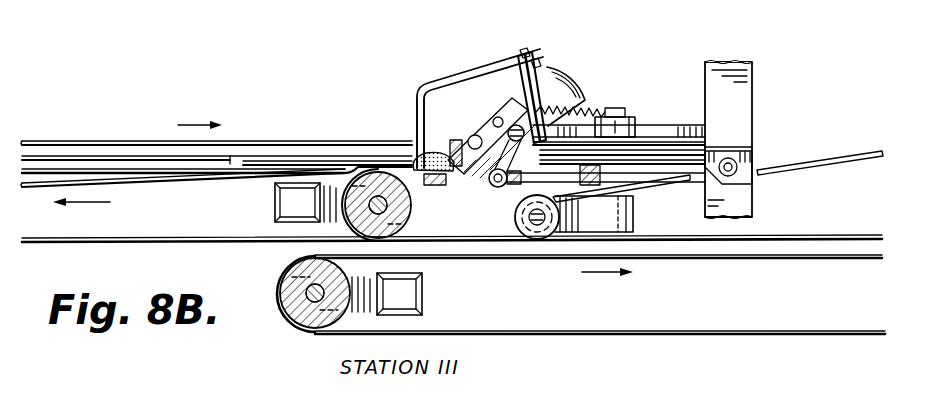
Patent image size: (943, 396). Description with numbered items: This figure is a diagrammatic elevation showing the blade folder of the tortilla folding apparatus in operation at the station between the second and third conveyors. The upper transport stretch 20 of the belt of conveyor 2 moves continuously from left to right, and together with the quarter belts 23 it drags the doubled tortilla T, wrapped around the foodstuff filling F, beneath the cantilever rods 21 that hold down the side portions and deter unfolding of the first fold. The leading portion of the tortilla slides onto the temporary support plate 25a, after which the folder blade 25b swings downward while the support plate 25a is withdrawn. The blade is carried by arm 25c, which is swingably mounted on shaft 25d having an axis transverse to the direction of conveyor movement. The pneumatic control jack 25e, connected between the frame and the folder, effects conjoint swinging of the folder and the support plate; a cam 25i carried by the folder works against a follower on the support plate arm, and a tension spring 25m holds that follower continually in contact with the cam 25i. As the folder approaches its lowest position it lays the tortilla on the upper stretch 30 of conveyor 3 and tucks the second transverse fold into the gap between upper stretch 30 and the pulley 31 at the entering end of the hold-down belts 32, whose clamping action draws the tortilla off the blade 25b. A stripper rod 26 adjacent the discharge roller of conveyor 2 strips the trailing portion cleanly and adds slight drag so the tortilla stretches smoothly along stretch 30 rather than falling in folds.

The second belt conveyor 2 is at (126, 250).
The third belt conveyor 3 is at (697, 349).
The upper transport stretch of second conveyor belt 20 is at (122, 168).
The cantilever rods 21 is at (233, 152).
The quarter belts 23 is at (75, 141).
The temporary support plate 25a is at (470, 180).
The folder blade 25b is at (415, 120).
The arm 25c is at (512, 68).
The shaft 25d is at (491, 190).
The pneumatic control jack 25e is at (666, 182).
The cam 25i is at (560, 70).
The tension spring 25m is at (596, 108).
The stripper rod 26 is at (421, 195).
The upper transport stretch of third conveyor belt 30 is at (744, 260).
The pulley 31 is at (540, 240).
The hold-down belts 32 is at (829, 236).
The tortilla T is at (298, 160).
The foodstuff filling F is at (442, 111).